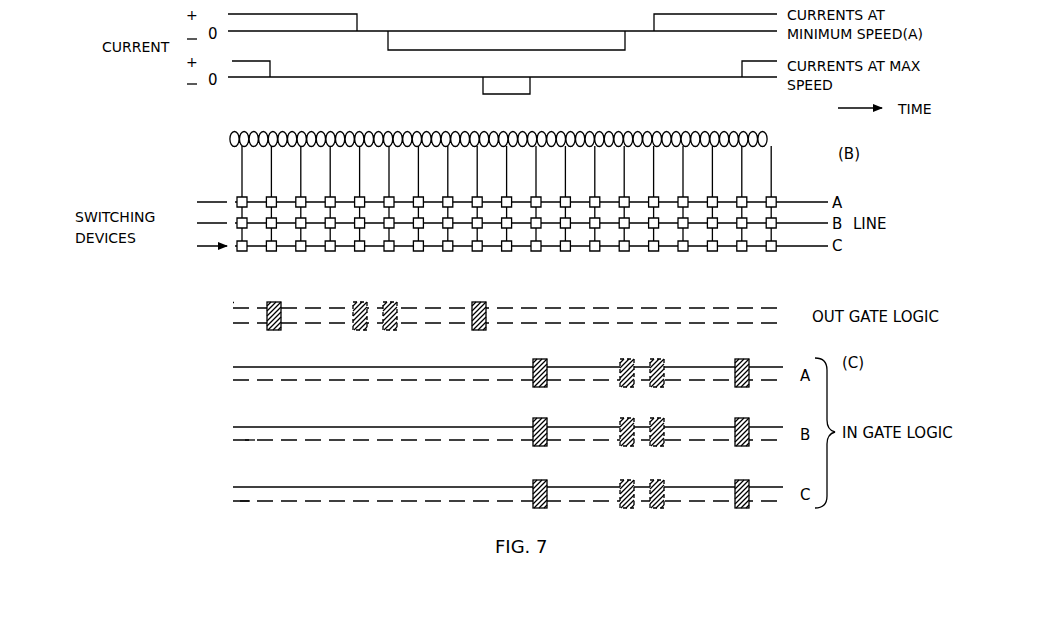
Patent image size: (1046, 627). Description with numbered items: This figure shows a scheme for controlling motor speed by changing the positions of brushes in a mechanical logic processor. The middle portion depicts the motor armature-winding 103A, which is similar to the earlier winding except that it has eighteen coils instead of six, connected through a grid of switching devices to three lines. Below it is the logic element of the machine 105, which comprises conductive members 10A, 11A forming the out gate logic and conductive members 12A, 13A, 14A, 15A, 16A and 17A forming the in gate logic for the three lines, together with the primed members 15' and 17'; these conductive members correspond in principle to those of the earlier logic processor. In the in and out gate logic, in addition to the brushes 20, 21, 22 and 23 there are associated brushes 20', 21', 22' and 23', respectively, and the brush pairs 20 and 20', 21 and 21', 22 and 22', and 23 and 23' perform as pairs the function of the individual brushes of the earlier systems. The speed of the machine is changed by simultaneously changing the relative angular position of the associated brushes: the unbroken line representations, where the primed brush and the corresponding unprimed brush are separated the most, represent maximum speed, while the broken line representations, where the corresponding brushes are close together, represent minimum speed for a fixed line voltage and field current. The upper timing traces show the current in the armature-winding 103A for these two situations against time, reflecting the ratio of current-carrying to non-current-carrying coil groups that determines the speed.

The armature-winding 103A is at (677, 131).
The logic element 105 is at (786, 301).
The conductive member 10A is at (486, 308).
The conductive member 11A is at (486, 323).
The conductive member 12A is at (486, 368).
The conductive member 13A is at (486, 383).
The conductive member 14A is at (268, 405).
The conductive member 15A is at (486, 441).
The conductive member 15' is at (249, 458).
The conductive member 16A is at (486, 486).
The conductive member 17A is at (486, 504).
The conductive member 17' is at (252, 517).
The associated brush 20' is at (317, 303).
The brush 20 is at (434, 299).
The associated brush 21' is at (583, 360).
The brush 21 is at (699, 360).
The associated brush 22' is at (583, 420).
The brush 22 is at (699, 420).
The associated brush 23' is at (583, 481).
The brush 23 is at (699, 481).